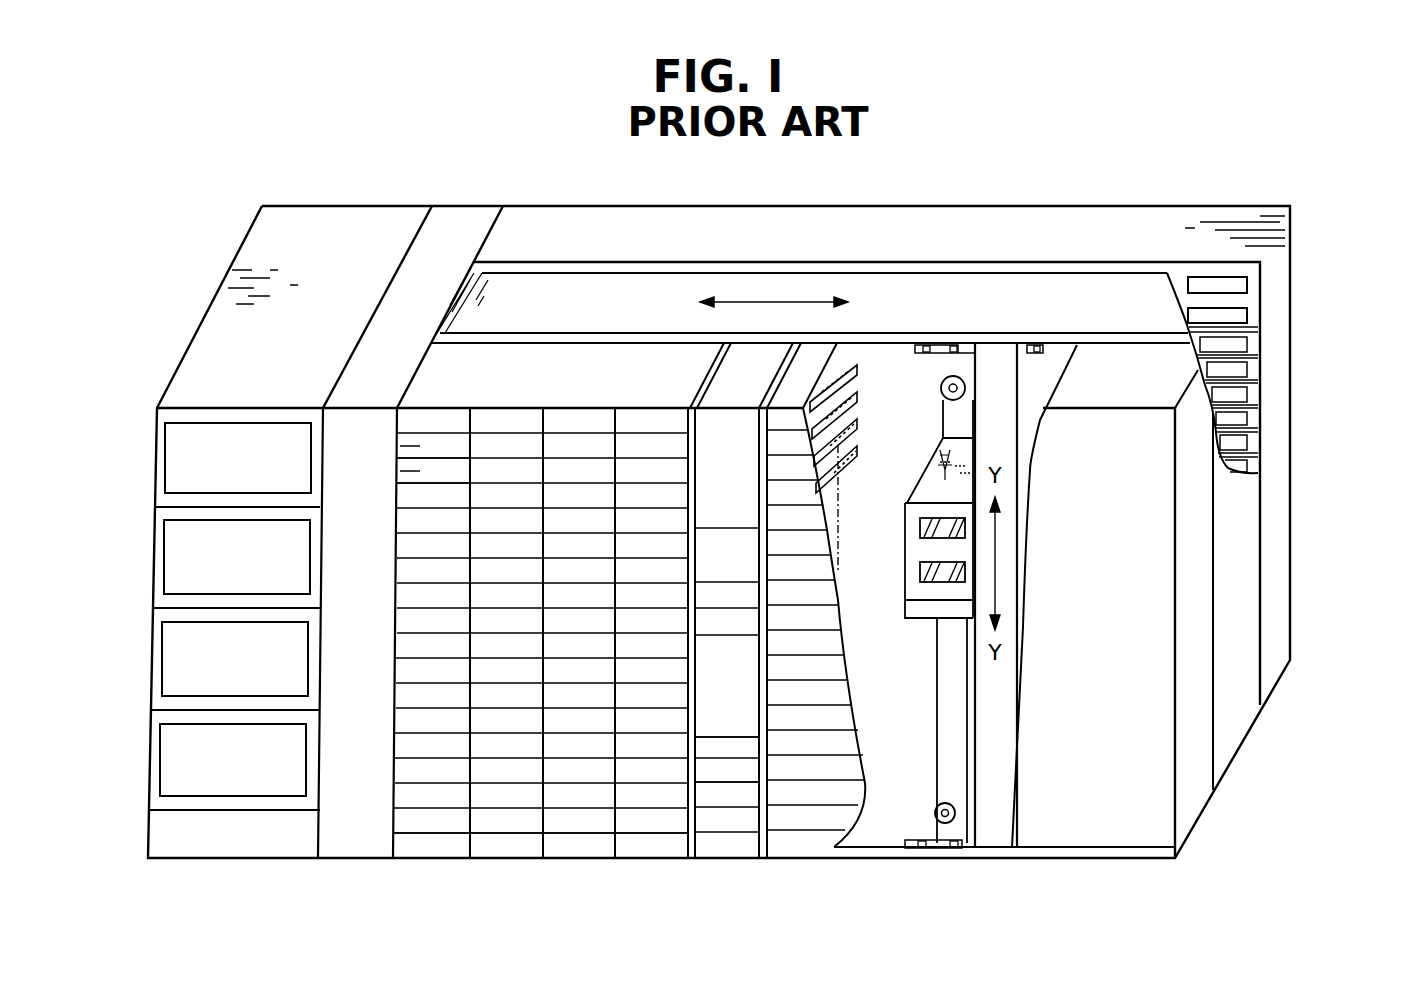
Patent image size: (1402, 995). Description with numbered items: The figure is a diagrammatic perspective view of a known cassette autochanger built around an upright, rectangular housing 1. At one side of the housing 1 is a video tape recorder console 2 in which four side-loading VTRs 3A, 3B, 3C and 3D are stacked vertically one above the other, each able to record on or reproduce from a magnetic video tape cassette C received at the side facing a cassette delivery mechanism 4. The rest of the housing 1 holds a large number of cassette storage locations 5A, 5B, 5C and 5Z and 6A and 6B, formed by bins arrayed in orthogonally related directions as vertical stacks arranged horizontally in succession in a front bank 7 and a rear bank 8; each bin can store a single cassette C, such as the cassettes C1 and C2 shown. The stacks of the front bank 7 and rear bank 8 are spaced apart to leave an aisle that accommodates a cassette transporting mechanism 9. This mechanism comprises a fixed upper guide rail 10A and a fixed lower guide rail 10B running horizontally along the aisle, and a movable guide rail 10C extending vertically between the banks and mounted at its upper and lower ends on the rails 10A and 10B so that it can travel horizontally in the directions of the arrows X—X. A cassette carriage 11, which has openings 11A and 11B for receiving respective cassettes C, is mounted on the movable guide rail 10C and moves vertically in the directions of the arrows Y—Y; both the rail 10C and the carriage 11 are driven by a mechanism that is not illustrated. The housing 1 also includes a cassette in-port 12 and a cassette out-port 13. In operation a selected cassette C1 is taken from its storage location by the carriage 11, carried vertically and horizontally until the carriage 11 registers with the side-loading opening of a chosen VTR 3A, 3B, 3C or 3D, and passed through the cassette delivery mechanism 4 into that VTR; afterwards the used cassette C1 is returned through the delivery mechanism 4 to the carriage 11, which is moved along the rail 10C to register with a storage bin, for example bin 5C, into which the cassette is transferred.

The housing 1 is at (222, 266).
The video tape recorder console 2 is at (340, 213).
The VTR 3A is at (176, 455).
The VTR 3B is at (176, 554).
The VTR 3C is at (176, 659).
The VTR 3D is at (176, 759).
The cassette delivery mechanism 4 is at (453, 218).
The cassette storage location 5A is at (425, 418).
The cassette storage location 5B is at (455, 440).
The cassette storage location 5C is at (460, 470).
The cassette storage location 5Z is at (426, 845).
The cassette storage location 6A is at (1258, 296).
The cassette storage location 6B is at (1250, 325).
The front bank 7 is at (535, 352).
The rear bank 8 is at (626, 238).
The cassette transporting mechanism 9 is at (878, 292).
The upper guide rail 10A is at (982, 330).
The lower guide rail 10B is at (938, 852).
The movable guide rail 10C is at (997, 795).
The cassette carriage 11 is at (921, 610).
The opening 11A is at (965, 528).
The opening 11B is at (965, 578).
The cassette in-port 12 is at (728, 437).
The cassette out-port 13 is at (727, 723).
The cassette C is at (858, 370).
The cassette C1 is at (421, 472).
The cassette C2 is at (421, 447).